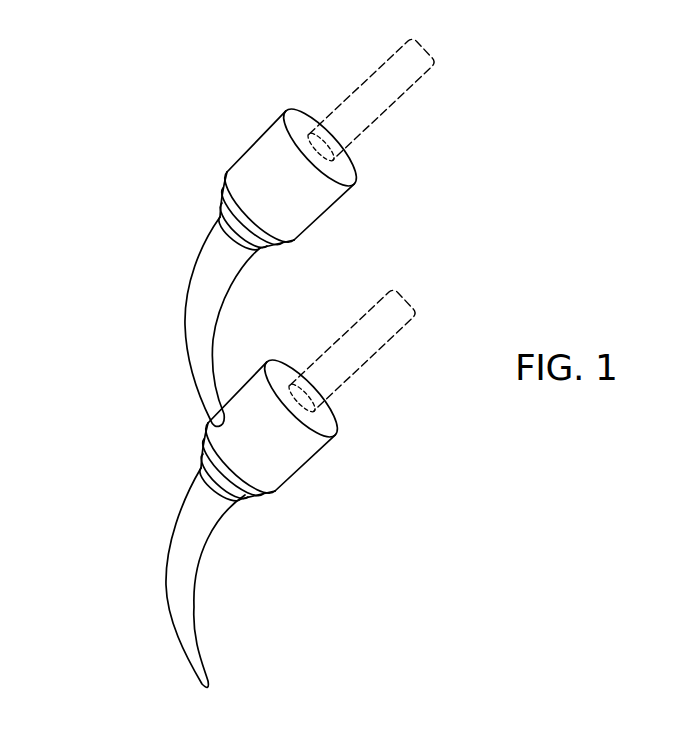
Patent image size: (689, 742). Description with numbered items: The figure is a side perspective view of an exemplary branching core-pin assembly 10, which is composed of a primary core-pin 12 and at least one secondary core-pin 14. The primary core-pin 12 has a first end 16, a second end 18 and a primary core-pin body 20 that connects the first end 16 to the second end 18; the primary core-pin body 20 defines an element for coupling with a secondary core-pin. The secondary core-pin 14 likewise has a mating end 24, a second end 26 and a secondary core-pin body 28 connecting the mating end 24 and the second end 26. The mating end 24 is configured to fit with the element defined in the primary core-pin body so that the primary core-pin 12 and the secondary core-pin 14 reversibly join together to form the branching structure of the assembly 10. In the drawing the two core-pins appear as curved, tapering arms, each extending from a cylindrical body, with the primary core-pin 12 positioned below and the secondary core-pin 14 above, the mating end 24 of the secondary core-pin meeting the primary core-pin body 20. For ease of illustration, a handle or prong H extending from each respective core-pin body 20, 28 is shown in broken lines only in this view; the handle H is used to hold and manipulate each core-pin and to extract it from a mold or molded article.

The branching core-pin assembly 10 is at (112, 367).
The primary core-pin 12 is at (363, 410).
The secondary core-pin 14 is at (380, 156).
The first end 16 is at (192, 672).
The second end 18 is at (318, 457).
The primary core-pin body 20 is at (270, 427).
The mating end 24 is at (203, 422).
The second end 26 is at (338, 205).
The secondary core-pin body 28 is at (303, 201).
The handle H is at (413, 87).